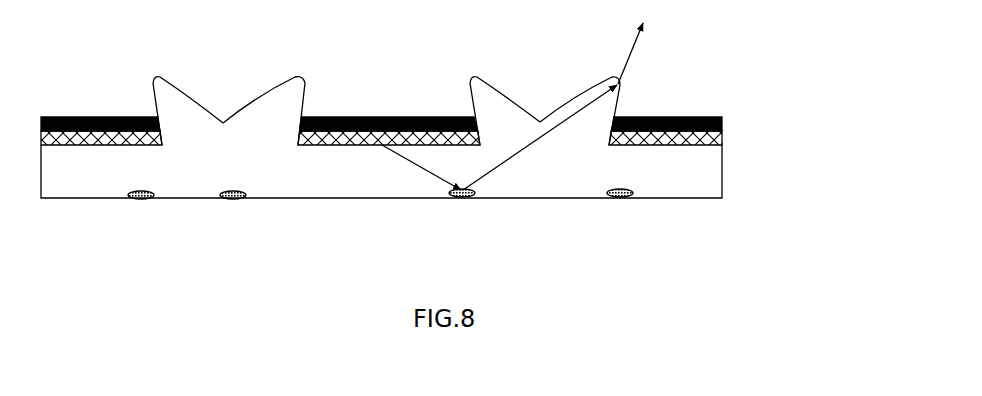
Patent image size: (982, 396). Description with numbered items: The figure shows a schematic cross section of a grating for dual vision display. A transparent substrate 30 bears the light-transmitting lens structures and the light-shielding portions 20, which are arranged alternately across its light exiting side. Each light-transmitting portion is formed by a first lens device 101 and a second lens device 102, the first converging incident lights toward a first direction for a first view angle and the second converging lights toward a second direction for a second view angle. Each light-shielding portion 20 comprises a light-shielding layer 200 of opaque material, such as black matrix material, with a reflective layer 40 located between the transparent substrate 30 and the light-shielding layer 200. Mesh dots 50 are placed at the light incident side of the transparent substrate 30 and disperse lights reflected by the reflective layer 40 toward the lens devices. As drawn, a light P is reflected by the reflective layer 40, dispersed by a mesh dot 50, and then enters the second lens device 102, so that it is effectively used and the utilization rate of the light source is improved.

The transparent substrate 30 is at (659, 167).
The reflective layer 40 is at (720, 138).
The light-shielding portion 20 is at (419, 73).
The light-shielding layer 200 is at (680, 118).
The first lens device 101 is at (288, 95).
The second lens device 102 is at (173, 95).
The mesh dots 50 is at (455, 198).
The light P is at (381, 147).